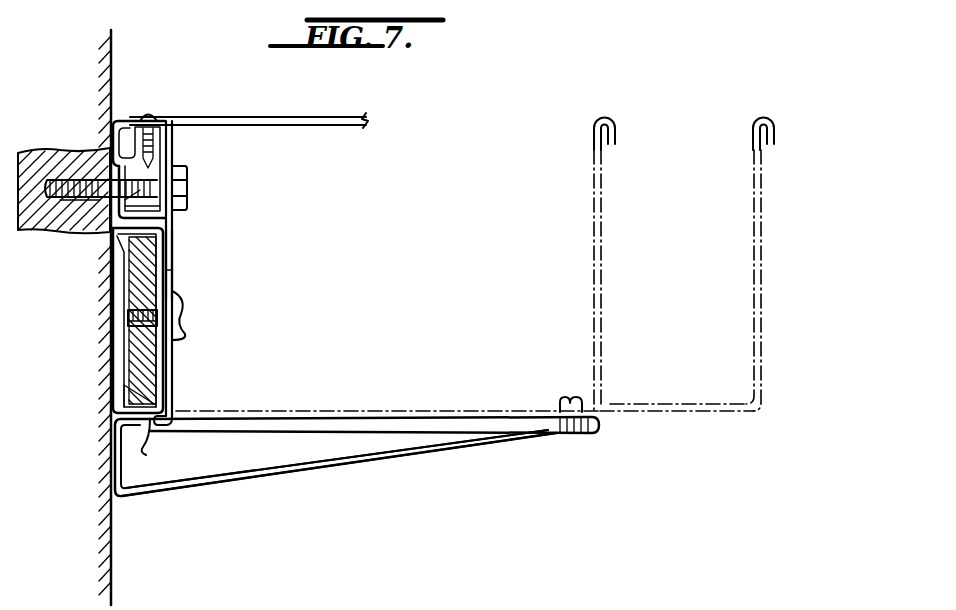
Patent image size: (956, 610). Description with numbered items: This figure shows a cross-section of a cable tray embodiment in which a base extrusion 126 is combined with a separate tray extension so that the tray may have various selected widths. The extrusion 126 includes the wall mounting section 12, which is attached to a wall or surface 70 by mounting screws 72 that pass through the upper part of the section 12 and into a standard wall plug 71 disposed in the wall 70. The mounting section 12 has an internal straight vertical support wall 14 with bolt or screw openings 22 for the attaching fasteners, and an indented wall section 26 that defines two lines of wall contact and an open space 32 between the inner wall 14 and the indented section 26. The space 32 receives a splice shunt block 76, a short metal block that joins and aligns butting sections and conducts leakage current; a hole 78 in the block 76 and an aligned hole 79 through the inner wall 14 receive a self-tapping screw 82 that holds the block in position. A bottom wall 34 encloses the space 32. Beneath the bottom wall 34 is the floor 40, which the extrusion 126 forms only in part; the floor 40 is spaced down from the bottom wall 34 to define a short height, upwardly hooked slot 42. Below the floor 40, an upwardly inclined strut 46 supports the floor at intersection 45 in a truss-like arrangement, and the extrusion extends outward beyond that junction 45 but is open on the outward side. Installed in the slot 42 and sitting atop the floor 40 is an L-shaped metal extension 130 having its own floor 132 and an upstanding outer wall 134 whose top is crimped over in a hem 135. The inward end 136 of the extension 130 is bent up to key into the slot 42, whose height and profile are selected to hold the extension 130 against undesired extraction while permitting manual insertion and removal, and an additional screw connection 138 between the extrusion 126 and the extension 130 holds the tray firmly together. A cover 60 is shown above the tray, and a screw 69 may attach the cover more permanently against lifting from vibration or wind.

The wall 70 is at (100, 62).
The wall plug 71 is at (54, 147).
The wall mounting section 12 is at (58, 238).
The mounting screws 72 is at (90, 242).
The bolt or screw openings 22 is at (175, 150).
The screw 69 is at (148, 118).
The cover 60 is at (275, 103).
The internal straight vertical support wall 14 is at (178, 242).
The cable tray section extrusion 126 is at (195, 254).
The holes 79 is at (177, 283).
The self-tapping screws 82 is at (182, 328).
The indented wall section 26 is at (123, 350).
The open space 32 is at (122, 380).
The splice shunt block 76 is at (160, 378).
The hole 78 is at (130, 336).
The bottom wall 34 is at (112, 440).
The slot 42 is at (163, 447).
The upwardly inclined strut 46 is at (390, 457).
The floor 40 is at (298, 418).
The intersection 45 is at (550, 437).
The screw connection 138 is at (573, 377).
The inward end 136 is at (177, 417).
The L-shaped metal extension 130 is at (620, 241).
The hem 135 is at (592, 133).
The upstanding outer wall 134 is at (753, 252).
The floor 132 is at (438, 396).